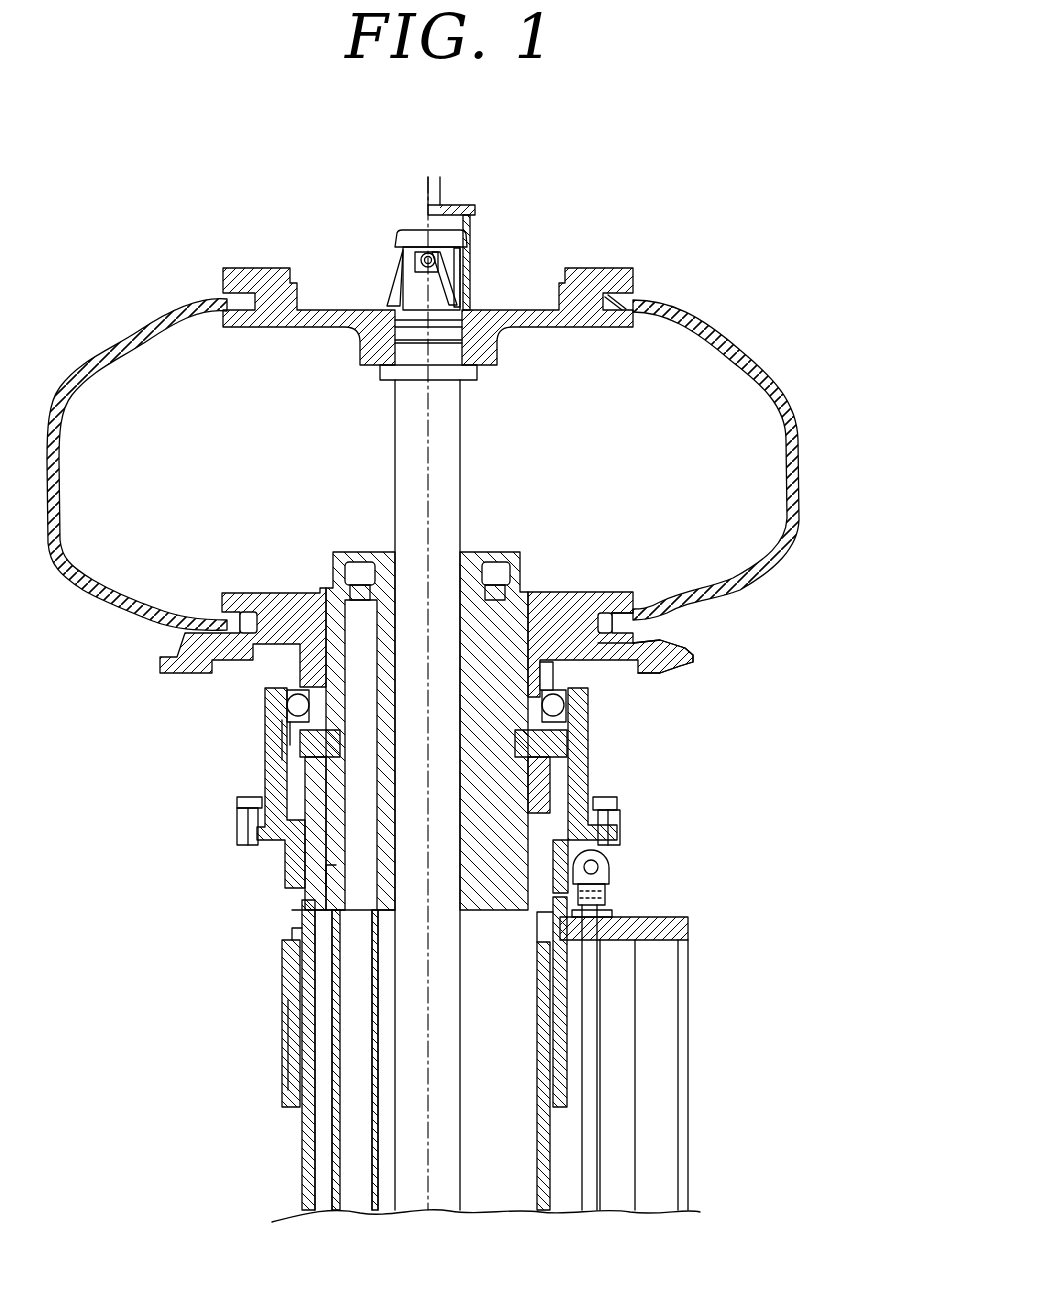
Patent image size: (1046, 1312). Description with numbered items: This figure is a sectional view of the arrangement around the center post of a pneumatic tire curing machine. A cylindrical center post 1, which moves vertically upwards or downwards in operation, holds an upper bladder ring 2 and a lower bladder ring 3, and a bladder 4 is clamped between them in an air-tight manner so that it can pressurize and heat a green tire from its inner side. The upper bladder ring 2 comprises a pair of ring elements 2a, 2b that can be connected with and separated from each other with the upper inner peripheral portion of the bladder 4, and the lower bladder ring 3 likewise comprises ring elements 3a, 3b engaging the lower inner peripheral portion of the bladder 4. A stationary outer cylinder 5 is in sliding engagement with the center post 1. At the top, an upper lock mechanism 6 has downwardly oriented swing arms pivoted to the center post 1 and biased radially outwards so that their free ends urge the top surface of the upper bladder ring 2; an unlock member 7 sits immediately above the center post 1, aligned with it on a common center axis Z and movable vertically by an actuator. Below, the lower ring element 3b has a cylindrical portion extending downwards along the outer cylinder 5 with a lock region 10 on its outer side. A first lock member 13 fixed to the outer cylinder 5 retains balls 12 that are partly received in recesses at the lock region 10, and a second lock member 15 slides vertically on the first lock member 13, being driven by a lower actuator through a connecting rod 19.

The center axis Z is at (432, 190).
The center post 1 is at (462, 486).
The upper bladder ring 2 is at (601, 270).
The ring element 2a is at (545, 330).
The ring element 2b is at (642, 282).
The lower bladder ring 3 is at (585, 586).
The ring element 3a is at (624, 600).
The lower ring element 3b is at (680, 667).
The bladder 4 is at (815, 462).
The stationary outer cylinder 5 is at (512, 585).
The upper lock mechanism 6 is at (383, 268).
The unlock member 7 is at (472, 252).
The lock region 10 is at (522, 672).
The balls 12 is at (310, 705).
The first lock member 13 is at (540, 722).
The second lock member 15 is at (585, 732).
The connecting rod 19 is at (590, 1138).